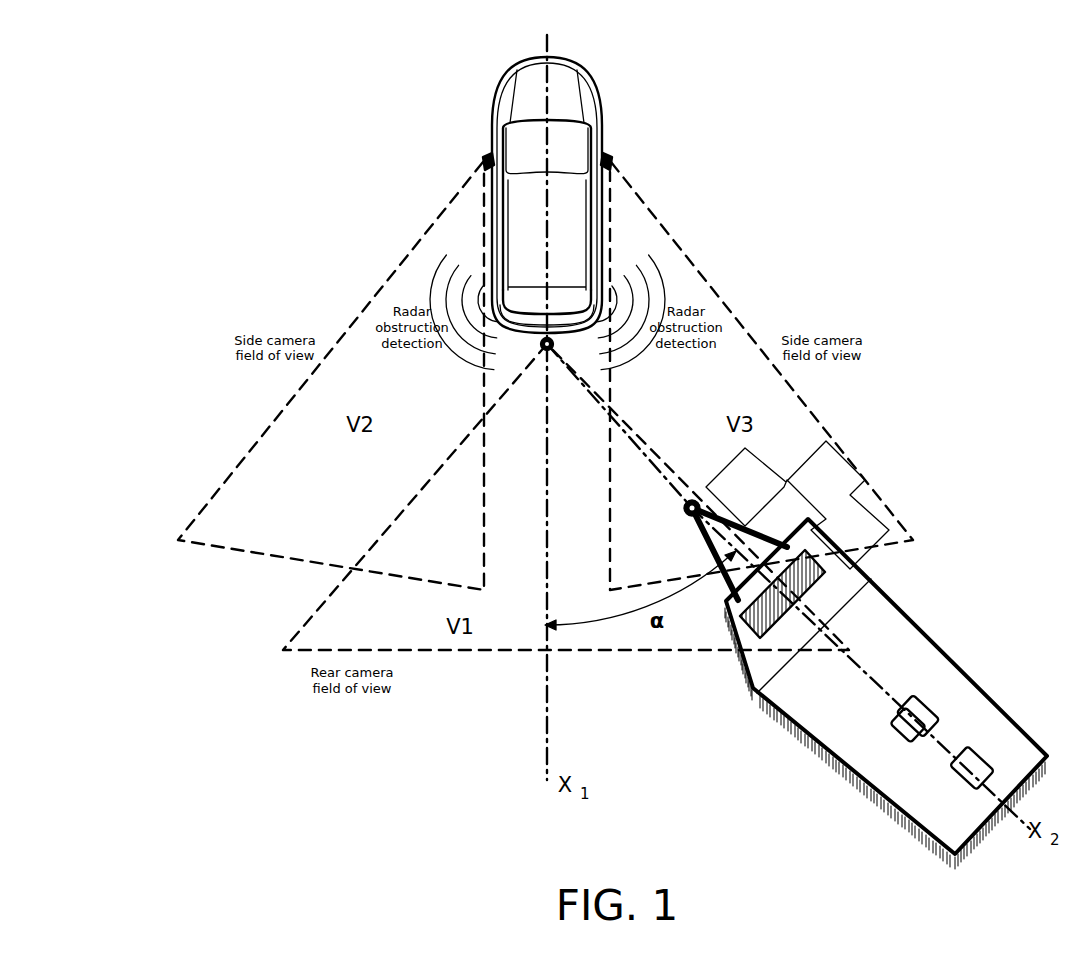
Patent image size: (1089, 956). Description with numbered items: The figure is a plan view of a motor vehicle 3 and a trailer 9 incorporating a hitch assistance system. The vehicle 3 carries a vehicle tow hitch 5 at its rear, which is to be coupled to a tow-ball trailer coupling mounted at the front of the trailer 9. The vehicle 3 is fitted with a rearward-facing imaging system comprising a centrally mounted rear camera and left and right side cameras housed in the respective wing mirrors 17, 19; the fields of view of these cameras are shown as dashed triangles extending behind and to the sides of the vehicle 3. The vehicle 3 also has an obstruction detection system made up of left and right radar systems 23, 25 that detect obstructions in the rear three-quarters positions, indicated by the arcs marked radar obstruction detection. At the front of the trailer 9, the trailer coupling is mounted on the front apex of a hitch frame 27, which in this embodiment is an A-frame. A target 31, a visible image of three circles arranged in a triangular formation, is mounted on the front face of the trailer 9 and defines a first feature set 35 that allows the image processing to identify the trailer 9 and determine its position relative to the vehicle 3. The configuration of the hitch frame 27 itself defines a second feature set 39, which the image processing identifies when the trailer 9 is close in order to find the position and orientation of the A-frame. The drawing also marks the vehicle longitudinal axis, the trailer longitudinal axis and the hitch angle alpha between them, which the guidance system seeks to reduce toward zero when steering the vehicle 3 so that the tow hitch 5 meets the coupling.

The motor vehicle 3 is at (770, 270).
The vehicle tow hitch 5 is at (541, 349).
The trailer 9 is at (953, 606).
The wing mirror 17 is at (484, 159).
The wing mirror 19 is at (610, 159).
The left radar system 23 is at (488, 270).
The right radar system 25 is at (607, 270).
The hitch frame 27 is at (730, 577).
The target 31 is at (758, 628).
The first feature set 35 is at (818, 566).
The second feature set 39 is at (700, 503).